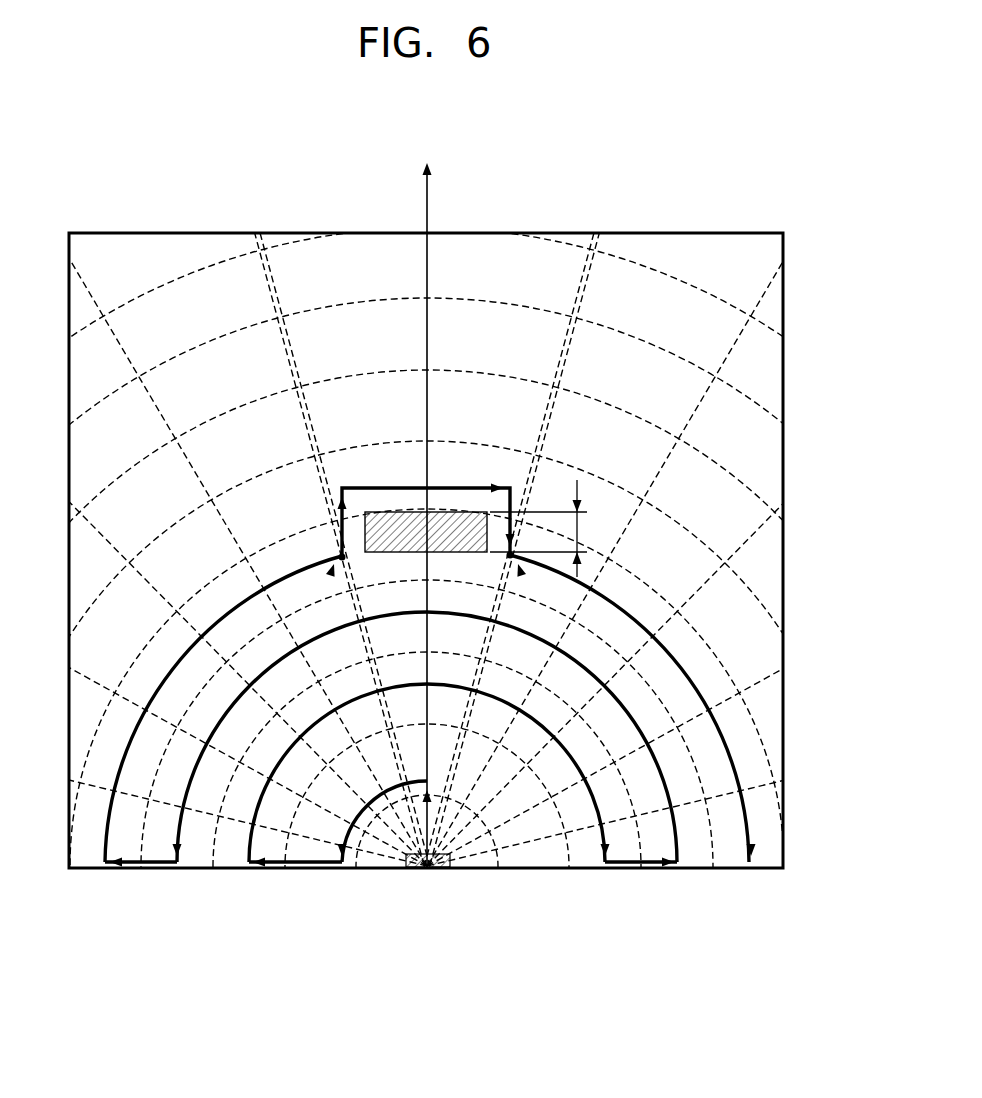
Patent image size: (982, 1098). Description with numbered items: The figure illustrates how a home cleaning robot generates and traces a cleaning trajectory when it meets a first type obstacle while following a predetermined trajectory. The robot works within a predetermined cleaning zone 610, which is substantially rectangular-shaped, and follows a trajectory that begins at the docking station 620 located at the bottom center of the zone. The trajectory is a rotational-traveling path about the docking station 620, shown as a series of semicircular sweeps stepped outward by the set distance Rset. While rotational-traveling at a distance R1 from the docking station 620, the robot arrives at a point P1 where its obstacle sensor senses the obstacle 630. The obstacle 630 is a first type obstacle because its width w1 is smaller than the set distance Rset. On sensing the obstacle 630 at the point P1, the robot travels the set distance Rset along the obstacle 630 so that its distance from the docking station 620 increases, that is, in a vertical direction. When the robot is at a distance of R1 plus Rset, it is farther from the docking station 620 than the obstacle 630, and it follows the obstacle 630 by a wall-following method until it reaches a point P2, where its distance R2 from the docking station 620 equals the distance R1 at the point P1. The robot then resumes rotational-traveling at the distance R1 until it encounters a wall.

The cleaning zone 610 is at (783, 490).
The docking station 620 is at (447, 867).
The obstacle 630 is at (452, 512).
The point P1 is at (344, 559).
The point P2 is at (508, 557).
The distance R1 is at (360, 650).
The distance R2 is at (495, 650).
The width w1 is at (555, 528).
The set distance Rset is at (490, 793).